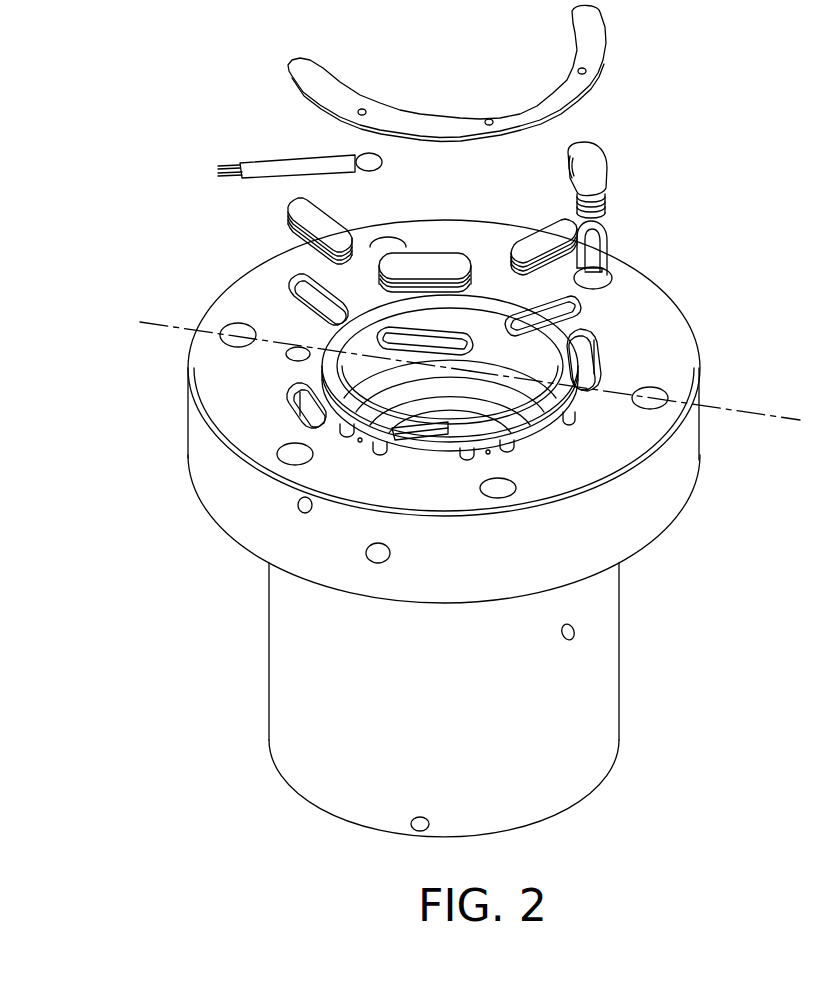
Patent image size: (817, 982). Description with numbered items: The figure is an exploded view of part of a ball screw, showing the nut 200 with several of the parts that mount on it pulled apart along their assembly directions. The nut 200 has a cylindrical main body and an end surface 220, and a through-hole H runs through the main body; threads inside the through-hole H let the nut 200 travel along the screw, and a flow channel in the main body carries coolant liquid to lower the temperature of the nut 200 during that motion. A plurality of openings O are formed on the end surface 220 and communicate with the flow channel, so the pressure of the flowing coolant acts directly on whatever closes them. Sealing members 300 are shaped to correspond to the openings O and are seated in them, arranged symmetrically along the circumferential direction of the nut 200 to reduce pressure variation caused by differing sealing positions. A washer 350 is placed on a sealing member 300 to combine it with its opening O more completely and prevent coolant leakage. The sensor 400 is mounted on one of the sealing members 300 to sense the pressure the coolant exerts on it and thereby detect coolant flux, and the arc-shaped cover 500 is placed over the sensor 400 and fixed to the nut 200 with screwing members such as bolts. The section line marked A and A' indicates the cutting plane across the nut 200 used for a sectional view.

The nut 200 is at (306, 758).
The end surface 220 is at (207, 422).
The sealing members 300 is at (594, 172).
The washer 350 is at (592, 322).
The sensor 400 is at (263, 167).
The cover 500 is at (590, 33).
The through-hole H is at (421, 468).
The openings O is at (566, 462).
The section line A is at (268, 359).
The section line A' is at (635, 438).